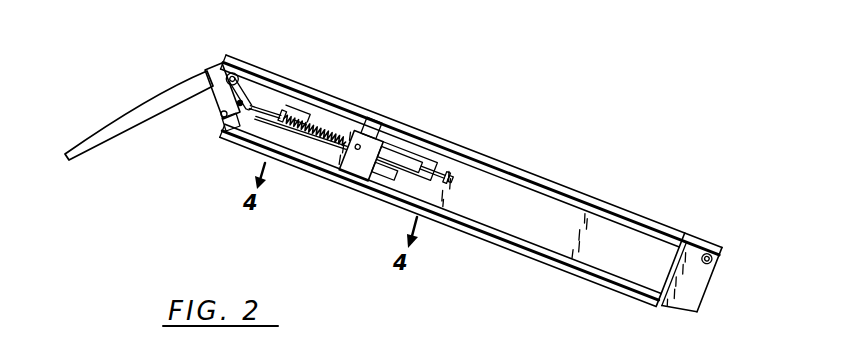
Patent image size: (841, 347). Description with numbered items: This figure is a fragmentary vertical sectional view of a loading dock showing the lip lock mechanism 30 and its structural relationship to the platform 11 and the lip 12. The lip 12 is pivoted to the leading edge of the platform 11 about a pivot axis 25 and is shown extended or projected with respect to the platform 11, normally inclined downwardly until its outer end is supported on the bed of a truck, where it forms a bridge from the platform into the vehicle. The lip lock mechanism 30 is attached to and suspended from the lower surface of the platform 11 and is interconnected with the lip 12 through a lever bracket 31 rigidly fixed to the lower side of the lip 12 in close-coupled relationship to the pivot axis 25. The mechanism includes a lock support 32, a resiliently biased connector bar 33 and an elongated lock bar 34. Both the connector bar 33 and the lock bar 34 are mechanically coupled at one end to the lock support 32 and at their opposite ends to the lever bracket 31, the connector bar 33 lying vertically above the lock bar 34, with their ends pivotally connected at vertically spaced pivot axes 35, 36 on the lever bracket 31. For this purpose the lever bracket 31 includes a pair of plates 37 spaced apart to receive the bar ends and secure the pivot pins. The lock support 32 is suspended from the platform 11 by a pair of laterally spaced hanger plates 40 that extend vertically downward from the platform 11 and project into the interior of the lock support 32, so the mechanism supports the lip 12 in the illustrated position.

The platform 11 is at (512, 162).
The lip 12 is at (128, 112).
The pivot axis 25 is at (234, 71).
The lip lock mechanism 30 is at (220, 179).
The lever bracket 31 is at (205, 69).
The lock support 32 is at (358, 168).
The connector bar 33 is at (313, 118).
The lock bar 34 is at (302, 150).
The pivot axis 35 is at (247, 98).
The pivot axis 36 is at (222, 132).
The plates 37 is at (237, 108).
The hanger plates 40 is at (378, 116).